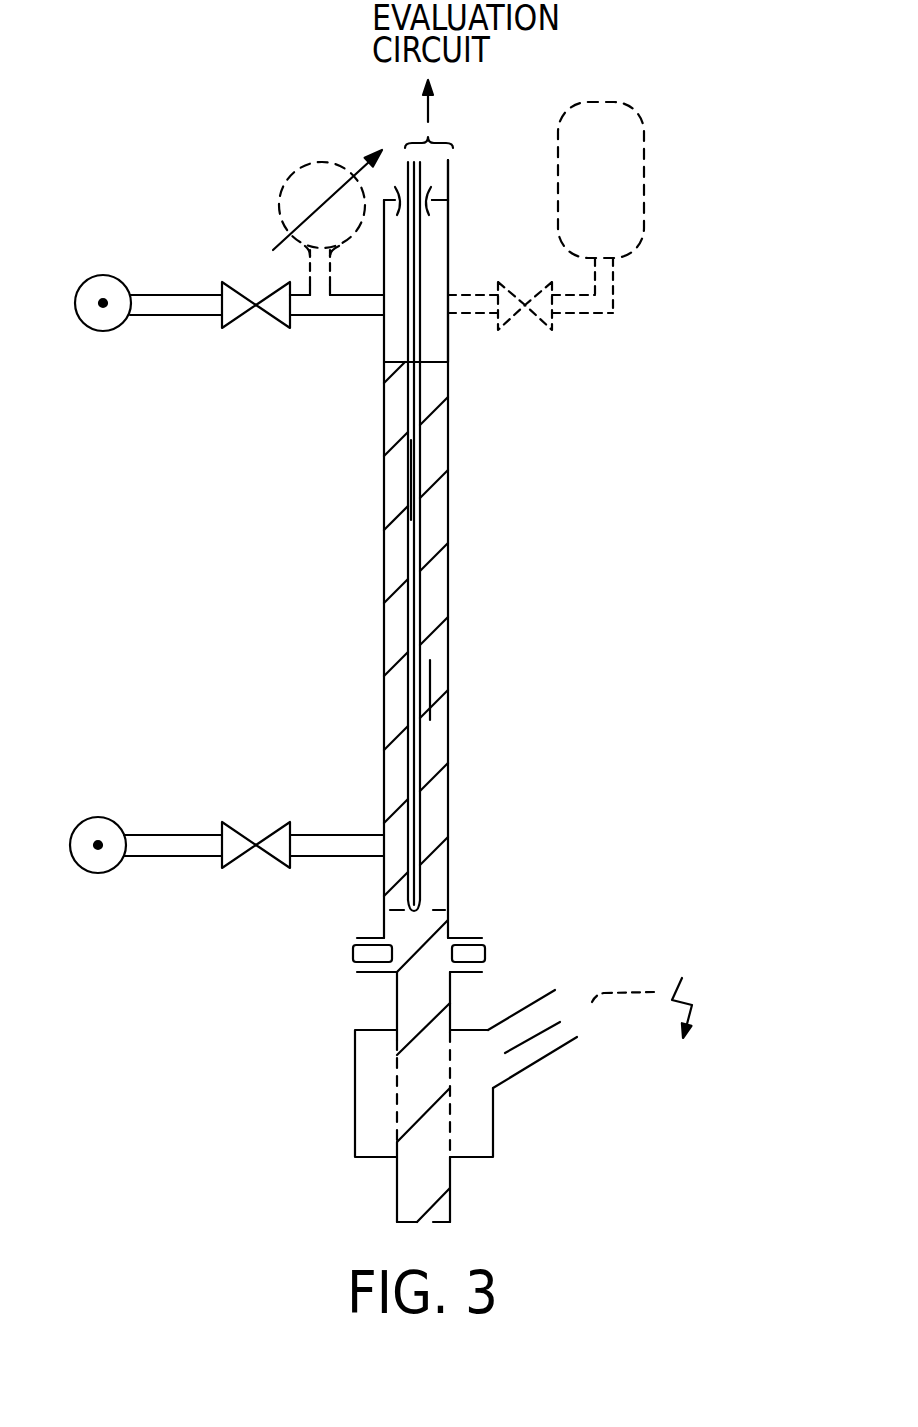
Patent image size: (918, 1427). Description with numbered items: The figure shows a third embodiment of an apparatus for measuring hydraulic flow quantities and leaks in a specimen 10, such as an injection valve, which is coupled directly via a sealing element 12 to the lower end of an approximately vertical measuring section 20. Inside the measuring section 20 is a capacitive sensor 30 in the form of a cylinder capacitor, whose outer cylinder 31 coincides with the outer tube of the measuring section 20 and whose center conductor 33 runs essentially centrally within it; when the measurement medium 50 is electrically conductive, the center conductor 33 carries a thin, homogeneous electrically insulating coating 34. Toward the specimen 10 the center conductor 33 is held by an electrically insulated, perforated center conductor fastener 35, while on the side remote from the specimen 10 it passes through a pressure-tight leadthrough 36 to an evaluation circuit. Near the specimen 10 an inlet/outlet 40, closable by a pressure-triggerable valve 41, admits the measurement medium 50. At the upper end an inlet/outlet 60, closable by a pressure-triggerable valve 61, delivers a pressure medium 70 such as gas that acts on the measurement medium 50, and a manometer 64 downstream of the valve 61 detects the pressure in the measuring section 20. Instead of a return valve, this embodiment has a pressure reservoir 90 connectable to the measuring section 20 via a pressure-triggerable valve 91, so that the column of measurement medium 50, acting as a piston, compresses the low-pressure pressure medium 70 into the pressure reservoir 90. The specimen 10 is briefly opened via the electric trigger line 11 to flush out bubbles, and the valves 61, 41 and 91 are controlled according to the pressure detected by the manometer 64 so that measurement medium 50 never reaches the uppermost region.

The specimen 10 is at (375, 1083).
The electric trigger line 11 is at (586, 1005).
The sealing element 12 is at (335, 963).
The measuring section 20 is at (433, 507).
The capacitive sensor 30 is at (372, 548).
The outer cylinder 31 is at (384, 594).
The center conductor 33 is at (411, 476).
The electrically insulating coating 34 is at (421, 612).
The center conductor fastener 35 is at (433, 888).
The leadthrough 36 is at (452, 178).
The inlet/outlet 40 is at (330, 836).
The valve 41 is at (237, 826).
The measurement medium 50 is at (430, 690).
The inlet/outlet 60 is at (168, 317).
The valve 61 is at (277, 318).
The manometer 64 is at (319, 170).
The pressure medium 70 is at (448, 258).
The pressure reservoir 90 is at (640, 176).
The valve 91 is at (518, 318).